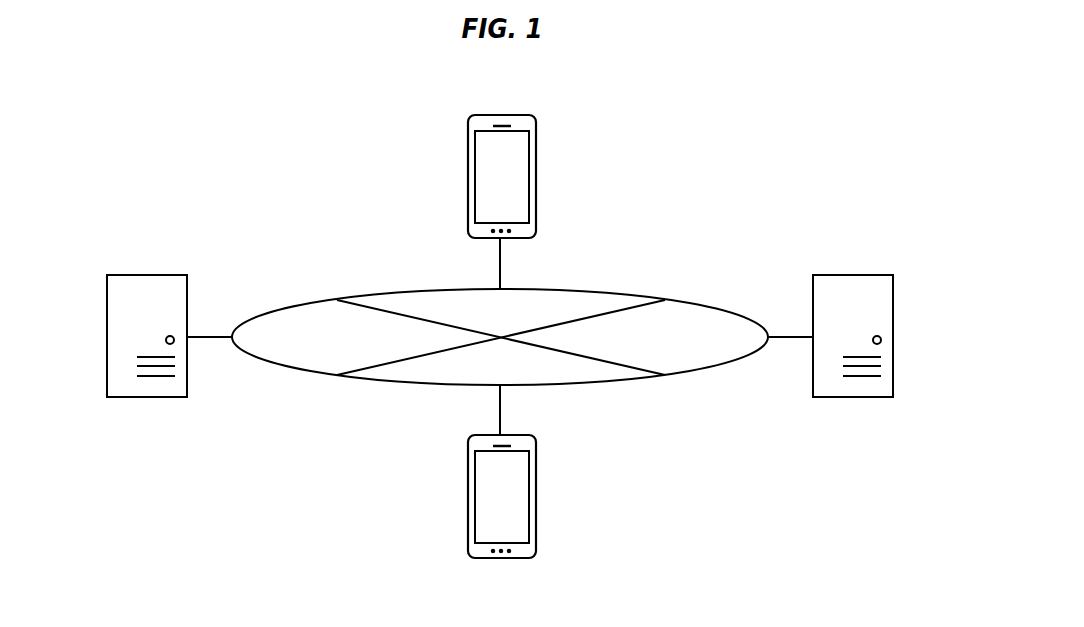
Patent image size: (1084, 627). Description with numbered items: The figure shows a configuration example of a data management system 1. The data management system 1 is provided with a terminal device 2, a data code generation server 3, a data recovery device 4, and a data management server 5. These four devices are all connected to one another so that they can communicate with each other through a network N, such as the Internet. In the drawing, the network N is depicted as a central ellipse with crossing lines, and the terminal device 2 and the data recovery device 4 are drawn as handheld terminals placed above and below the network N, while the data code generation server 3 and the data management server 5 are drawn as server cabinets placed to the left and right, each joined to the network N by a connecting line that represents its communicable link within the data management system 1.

The data management system 1 is at (838, 116).
The terminal device 2 is at (500, 115).
The data code generation server 3 is at (143, 275).
The data recovery device 4 is at (500, 558).
The data management server 5 is at (849, 275).
The network N is at (625, 290).